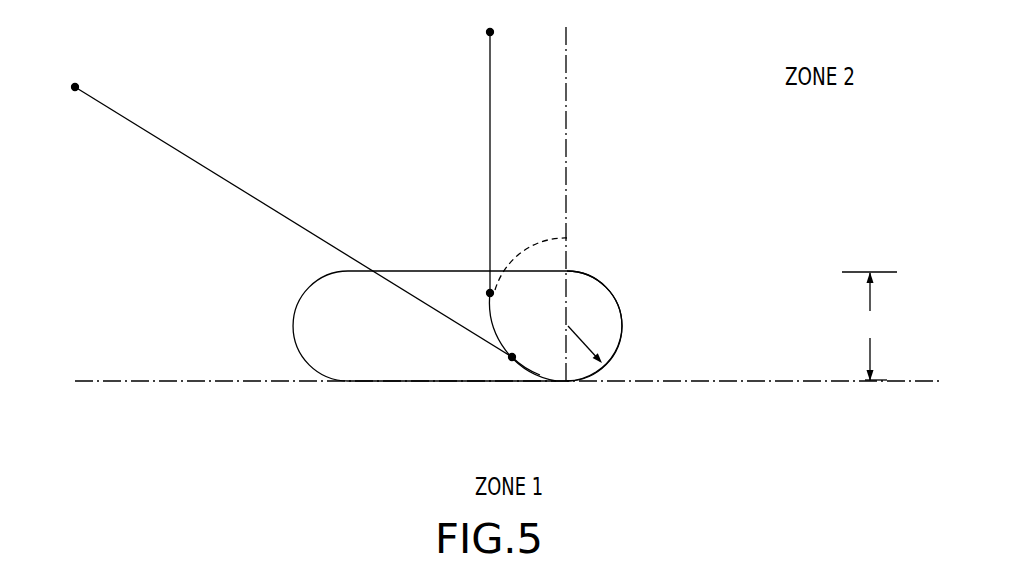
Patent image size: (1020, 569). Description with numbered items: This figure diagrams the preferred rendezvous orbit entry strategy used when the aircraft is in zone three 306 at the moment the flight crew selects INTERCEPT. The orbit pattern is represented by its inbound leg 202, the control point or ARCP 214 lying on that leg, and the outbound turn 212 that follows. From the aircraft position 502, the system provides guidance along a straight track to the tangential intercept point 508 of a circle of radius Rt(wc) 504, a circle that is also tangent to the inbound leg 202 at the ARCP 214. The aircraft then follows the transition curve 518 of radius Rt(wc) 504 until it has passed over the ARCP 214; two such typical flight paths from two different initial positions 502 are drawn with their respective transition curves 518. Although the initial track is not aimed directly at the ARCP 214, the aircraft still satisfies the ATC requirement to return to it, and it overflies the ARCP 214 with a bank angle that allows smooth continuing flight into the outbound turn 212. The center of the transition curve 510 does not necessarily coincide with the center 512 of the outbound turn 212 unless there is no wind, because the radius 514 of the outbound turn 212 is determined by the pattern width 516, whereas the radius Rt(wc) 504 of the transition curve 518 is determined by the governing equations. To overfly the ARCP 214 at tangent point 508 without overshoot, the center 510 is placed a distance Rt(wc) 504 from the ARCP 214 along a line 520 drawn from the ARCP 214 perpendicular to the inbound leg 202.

The inbound leg 202 is at (397, 382).
The outbound turn 212 is at (622, 327).
The control point (ARCP) 214 is at (570, 383).
The zone 3 306 is at (320, 111).
The aircraft position 502 is at (75, 92).
The radius Rt(wc) 504 is at (528, 318).
The tangential intercept point 508 is at (490, 293).
The center of the transition curve 510 is at (500, 326).
The center of the outbound curve 512 is at (568, 326).
The radius of the outbound turn 514 is at (596, 350).
The pattern width 516 is at (869, 326).
The transition curve 518 is at (524, 368).
The perpendicular line 520 is at (567, 207).